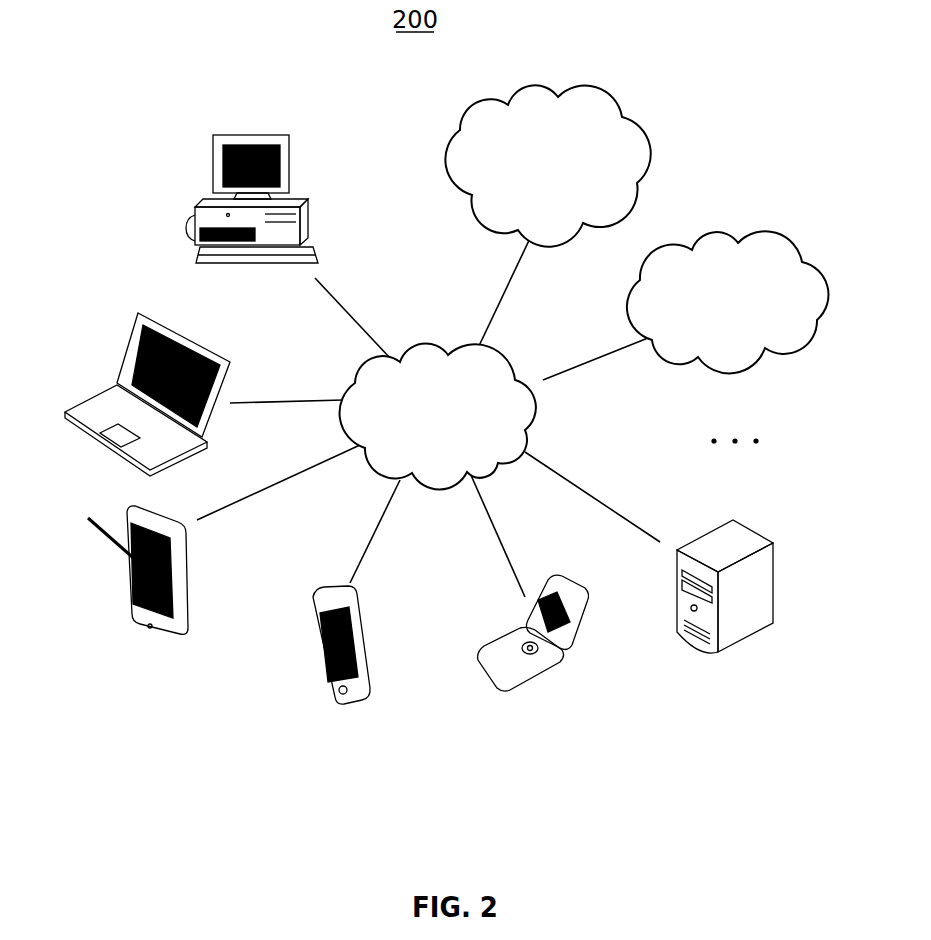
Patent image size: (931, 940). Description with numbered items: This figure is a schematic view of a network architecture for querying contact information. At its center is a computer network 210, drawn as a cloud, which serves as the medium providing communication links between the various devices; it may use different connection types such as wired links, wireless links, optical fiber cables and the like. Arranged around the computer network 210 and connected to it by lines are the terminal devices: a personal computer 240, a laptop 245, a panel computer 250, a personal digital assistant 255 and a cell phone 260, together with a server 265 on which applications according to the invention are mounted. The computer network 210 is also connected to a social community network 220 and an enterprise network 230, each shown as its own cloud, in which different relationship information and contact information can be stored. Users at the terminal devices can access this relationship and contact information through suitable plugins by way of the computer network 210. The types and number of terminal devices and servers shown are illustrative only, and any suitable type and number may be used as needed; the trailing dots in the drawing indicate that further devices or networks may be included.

The computer network 210 is at (421, 445).
The social community network 220 is at (531, 217).
The enterprise network 230 is at (716, 344).
The personal computer 240 is at (252, 132).
The laptop 245 is at (160, 327).
The panel computer 250 is at (158, 633).
The personal digital assistant 255 is at (343, 703).
The cell phone 260 is at (525, 687).
The server 265 is at (718, 652).